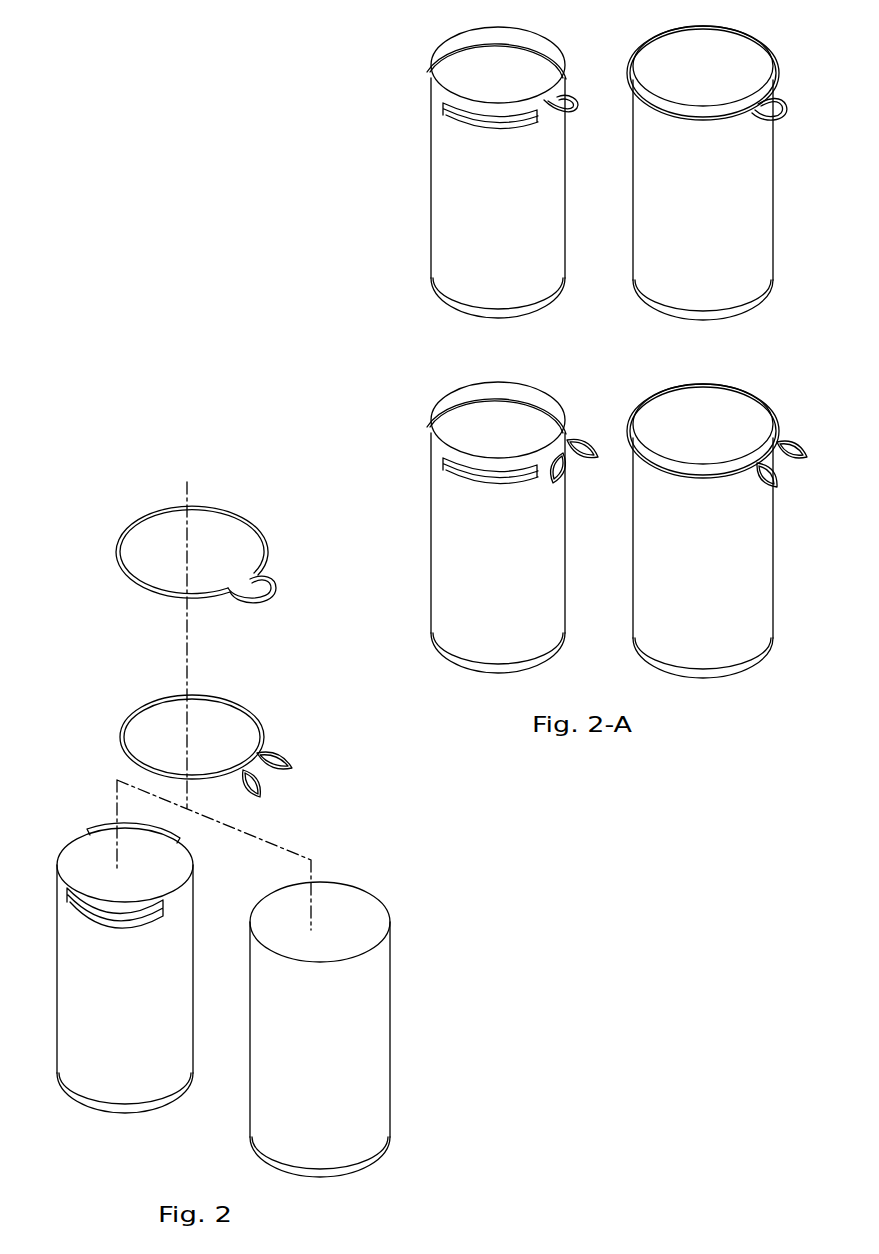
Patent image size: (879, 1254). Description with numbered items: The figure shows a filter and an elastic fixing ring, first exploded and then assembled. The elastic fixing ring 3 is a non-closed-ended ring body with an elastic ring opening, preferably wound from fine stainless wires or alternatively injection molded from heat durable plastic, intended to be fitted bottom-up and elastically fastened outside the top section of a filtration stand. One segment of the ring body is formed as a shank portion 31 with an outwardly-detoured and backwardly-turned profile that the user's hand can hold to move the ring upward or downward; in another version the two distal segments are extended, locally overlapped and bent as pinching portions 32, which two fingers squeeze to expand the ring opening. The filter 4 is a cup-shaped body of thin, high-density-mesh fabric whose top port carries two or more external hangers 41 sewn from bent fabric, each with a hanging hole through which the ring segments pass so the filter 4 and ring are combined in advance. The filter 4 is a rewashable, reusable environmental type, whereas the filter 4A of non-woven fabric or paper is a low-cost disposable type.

In FIG. 2, the elastic fixing ring 3 is at (226, 622).
In FIG. 2-A, the elastic fixing ring 3 is at (605, 293).
In FIG. 2, the shank portion 31 is at (270, 578).
In FIG. 2-A, the shank portion 31 is at (567, 95).
In FIG. 2, the pinching portions 32 is at (278, 755).
In FIG. 2-A, the pinching portions 32 is at (578, 437).
In FIG. 2, the filter 4 is at (107, 968).
In FIG. 2-A, the filter 4 is at (474, 350).
In FIG. 2, the hangers 41 is at (93, 912).
In FIG. 2-A, the hangers 41 is at (465, 117).
In FIG. 2, the filter 4A is at (363, 1040).
In FIG. 2-A, the filter 4A is at (725, 238).